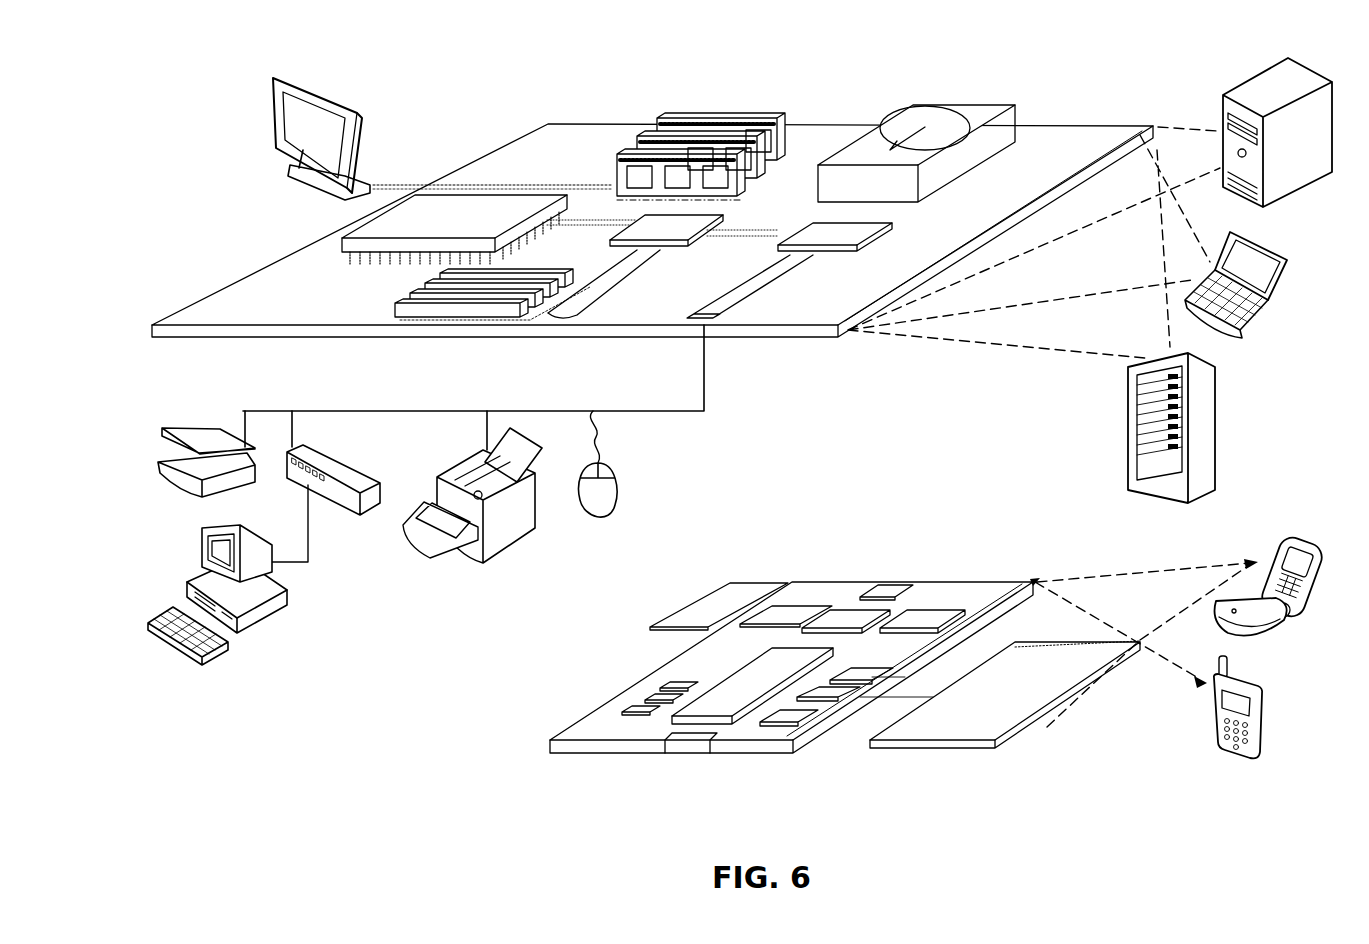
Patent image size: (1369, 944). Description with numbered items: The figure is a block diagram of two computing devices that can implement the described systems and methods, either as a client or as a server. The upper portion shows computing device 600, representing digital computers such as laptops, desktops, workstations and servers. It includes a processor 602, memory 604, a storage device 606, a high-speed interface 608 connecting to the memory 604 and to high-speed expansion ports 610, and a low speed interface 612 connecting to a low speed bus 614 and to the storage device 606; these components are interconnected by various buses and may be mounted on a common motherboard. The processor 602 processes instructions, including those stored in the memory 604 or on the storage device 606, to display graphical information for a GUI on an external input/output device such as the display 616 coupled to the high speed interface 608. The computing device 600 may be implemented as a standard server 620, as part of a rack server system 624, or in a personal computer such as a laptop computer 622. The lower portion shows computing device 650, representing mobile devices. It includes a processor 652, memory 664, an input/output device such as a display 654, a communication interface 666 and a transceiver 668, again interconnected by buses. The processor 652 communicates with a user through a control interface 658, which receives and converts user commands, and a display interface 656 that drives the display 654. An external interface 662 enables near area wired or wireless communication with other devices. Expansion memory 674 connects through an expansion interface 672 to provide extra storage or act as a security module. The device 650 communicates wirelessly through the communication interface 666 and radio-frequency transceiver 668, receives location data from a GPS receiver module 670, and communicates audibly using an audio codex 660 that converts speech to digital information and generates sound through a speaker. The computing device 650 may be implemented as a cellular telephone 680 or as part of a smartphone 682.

The computing device 600 is at (467, 98).
The processor 602 is at (342, 241).
The memory 604 is at (672, 114).
The storage device 606 is at (906, 113).
The high-speed interface 608 is at (594, 187).
The high-speed expansion ports 610 is at (403, 302).
The low speed interface 612 is at (818, 233).
The low speed bus 614 is at (717, 332).
The display 616 is at (277, 78).
The standard server 620 is at (1217, 111).
The laptop computer 622 is at (1288, 258).
The rack server system 624 is at (1130, 453).
The computing device 650 is at (521, 752).
The processor 652 is at (727, 718).
The display 654 is at (965, 728).
The display interface 656 is at (790, 714).
The control interface 658 is at (840, 700).
The audio codex 660 is at (862, 685).
The external interface 662 is at (697, 733).
The memory 664 is at (653, 702).
The communication interface 666 is at (845, 618).
The transceiver 668 is at (923, 617).
The GPS receiver module 670 is at (895, 584).
The expansion interface 672 is at (775, 600).
The expansion memory 674 is at (730, 594).
The cellular telephone 680 is at (1273, 535).
The smartphone 682 is at (1212, 718).